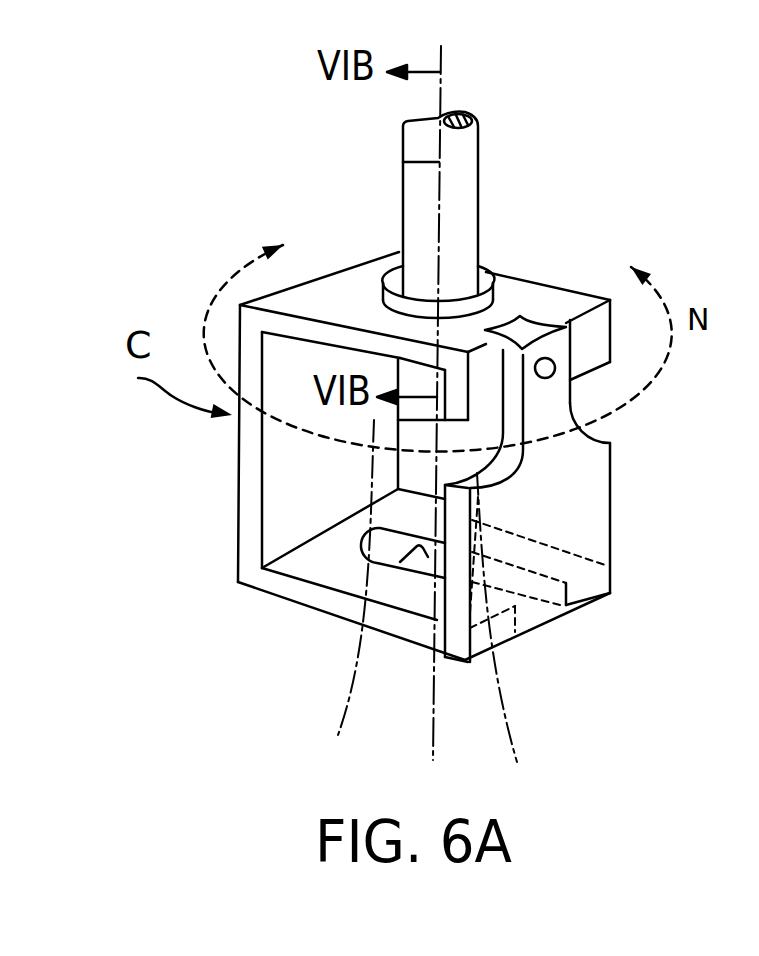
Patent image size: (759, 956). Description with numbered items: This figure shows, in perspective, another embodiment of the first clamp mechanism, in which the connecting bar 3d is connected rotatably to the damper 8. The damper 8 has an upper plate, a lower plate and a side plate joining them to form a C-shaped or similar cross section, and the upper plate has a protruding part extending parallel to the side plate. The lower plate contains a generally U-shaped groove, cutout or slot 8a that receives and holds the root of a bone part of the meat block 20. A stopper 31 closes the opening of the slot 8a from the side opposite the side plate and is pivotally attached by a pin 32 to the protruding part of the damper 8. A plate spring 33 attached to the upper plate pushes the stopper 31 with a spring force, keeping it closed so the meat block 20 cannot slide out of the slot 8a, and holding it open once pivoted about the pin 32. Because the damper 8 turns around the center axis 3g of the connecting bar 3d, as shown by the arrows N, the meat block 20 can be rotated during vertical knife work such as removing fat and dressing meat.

The connecting bar 3d is at (472, 162).
The center axis 3g is at (403, 159).
The damper 8 is at (330, 293).
The slot 8a is at (374, 568).
The meat block 20 is at (508, 719).
The stopper 31 is at (577, 496).
The pin 32 is at (552, 377).
The plate spring 33 is at (520, 314).